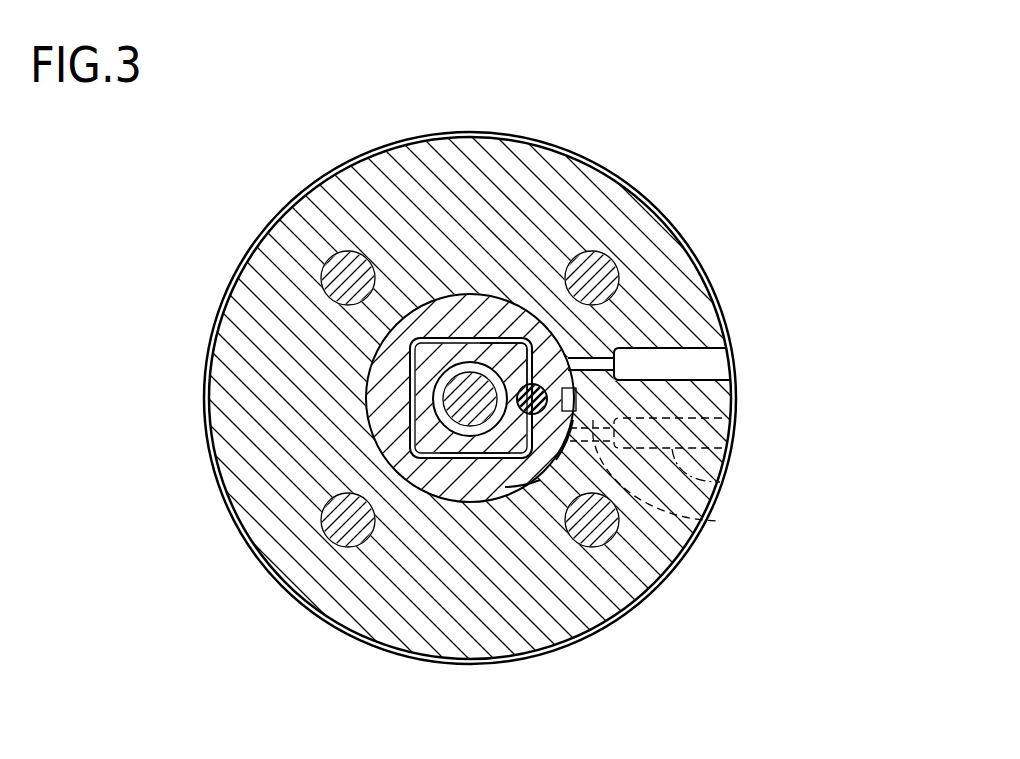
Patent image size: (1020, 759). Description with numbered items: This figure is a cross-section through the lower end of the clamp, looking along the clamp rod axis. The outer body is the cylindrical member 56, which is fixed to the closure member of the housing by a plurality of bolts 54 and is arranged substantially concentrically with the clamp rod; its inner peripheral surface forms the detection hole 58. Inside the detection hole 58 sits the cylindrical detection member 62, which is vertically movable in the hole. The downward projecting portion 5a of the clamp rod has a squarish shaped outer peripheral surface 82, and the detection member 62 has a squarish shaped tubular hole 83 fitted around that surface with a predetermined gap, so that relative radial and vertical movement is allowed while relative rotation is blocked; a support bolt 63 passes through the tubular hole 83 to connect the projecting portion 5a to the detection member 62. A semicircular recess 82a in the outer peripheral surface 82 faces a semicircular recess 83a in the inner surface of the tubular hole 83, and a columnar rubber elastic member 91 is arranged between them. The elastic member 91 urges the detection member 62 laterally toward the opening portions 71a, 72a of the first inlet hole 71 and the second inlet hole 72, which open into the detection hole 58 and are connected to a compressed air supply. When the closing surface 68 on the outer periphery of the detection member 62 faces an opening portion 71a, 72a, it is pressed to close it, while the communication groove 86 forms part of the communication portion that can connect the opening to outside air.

The cylindrical member 56 is at (604, 167).
The bolt 54 is at (337, 271).
The detection hole 58 is at (375, 428).
The projecting portion 5a is at (423, 453).
The squarish shaped outer peripheral surface 82 is at (453, 453).
The recess 82a is at (525, 385).
The squarish shaped tubular hole 83 is at (495, 457).
The semicircular recess 83a is at (567, 445).
The detection member 62 is at (524, 479).
The support bolt 63 is at (453, 397).
The elastic member 91 is at (533, 384).
The communication groove 86 is at (577, 400).
The second inlet hole 72 is at (675, 348).
The opening portion 72a is at (592, 357).
The closing surface 68 is at (718, 424).
The first inlet hole 71 is at (720, 482).
The opening portion 71a is at (720, 521).